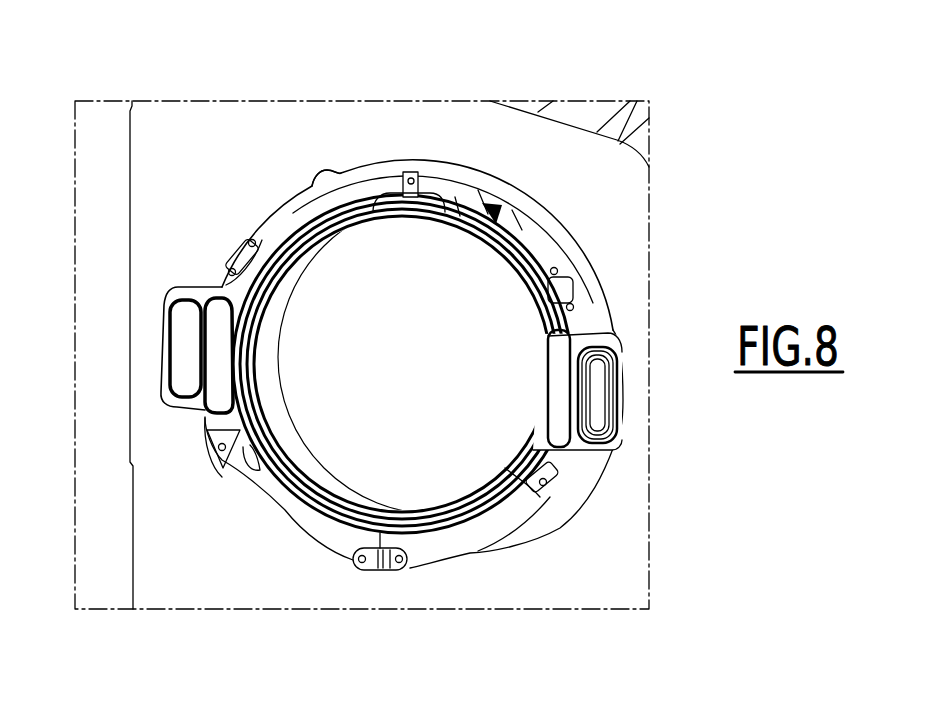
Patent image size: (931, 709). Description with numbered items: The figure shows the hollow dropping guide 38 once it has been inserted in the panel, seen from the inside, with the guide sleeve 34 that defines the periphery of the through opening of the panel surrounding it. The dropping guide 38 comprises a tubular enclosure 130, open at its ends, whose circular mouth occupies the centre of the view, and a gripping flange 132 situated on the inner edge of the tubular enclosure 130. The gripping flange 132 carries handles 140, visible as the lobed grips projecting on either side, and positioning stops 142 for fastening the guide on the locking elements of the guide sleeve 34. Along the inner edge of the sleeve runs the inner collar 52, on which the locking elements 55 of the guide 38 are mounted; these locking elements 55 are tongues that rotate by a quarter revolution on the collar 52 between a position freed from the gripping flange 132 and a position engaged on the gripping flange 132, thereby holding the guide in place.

The guide sleeve 34 is at (558, 512).
The hollow dropping guide 38 is at (470, 182).
The inner collar 52 is at (522, 216).
The elements for locking the guide 55 is at (411, 172).
The tubular enclosure 130 is at (365, 448).
The gripping flange 132 is at (228, 466).
The handles 140 is at (167, 347).
The positioning stops 142 is at (350, 197).